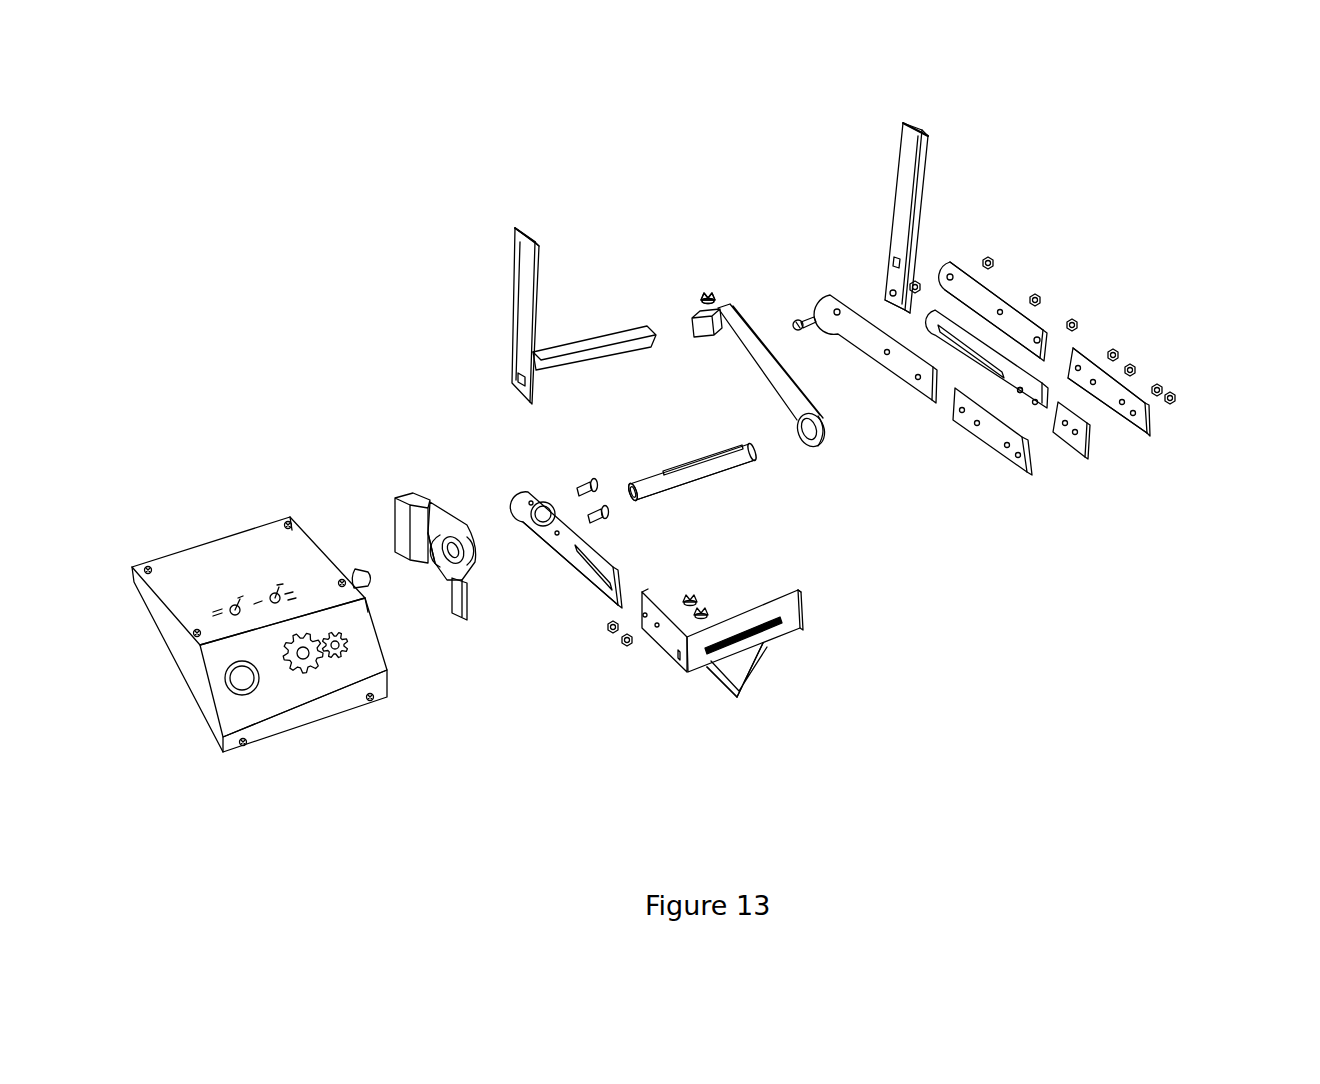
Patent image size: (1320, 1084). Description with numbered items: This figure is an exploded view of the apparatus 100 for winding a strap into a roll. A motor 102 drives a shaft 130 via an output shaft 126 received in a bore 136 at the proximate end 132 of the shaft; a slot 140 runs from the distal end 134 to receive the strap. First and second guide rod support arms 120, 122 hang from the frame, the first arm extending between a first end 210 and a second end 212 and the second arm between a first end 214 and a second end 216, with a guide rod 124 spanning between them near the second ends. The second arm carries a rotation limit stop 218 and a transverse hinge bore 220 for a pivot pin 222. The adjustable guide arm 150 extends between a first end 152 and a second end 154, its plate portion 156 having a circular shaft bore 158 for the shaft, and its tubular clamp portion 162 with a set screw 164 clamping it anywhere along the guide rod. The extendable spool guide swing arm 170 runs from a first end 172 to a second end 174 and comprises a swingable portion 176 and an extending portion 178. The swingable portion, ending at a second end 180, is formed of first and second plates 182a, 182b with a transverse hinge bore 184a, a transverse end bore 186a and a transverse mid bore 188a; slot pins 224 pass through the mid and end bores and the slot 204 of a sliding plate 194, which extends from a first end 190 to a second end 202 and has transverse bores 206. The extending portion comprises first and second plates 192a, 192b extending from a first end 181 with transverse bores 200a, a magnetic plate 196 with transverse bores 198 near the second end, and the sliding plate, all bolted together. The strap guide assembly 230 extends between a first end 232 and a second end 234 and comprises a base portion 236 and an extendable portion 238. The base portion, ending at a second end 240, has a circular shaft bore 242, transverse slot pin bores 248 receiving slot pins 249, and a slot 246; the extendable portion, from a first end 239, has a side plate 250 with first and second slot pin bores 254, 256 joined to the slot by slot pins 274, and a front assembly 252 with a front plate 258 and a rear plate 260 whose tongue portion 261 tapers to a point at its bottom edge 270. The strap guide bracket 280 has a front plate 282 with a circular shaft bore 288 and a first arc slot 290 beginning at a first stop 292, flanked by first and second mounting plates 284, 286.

The apparatus for winding a strap into a roll 100 is at (1130, 142).
The motor 102 is at (203, 563).
The first guide rod support arm 120 is at (512, 295).
The second guide rod support arm 122 is at (895, 167).
The guide rod 124 is at (577, 345).
The output shaft 126 is at (358, 578).
The shaft 130 is at (709, 452).
The proximate end 132 is at (628, 485).
The distal end 134 is at (750, 445).
The bore 136 is at (623, 490).
The slot 140 is at (705, 455).
The adjustable guide arm 150 is at (778, 372).
The first end 152 is at (708, 292).
The second end 154 is at (825, 443).
The plate portion 156 is at (793, 373).
The circular shaft bore 158 is at (812, 425).
The tubular clamp portion 162 is at (692, 320).
The set screw 164 is at (702, 297).
The extendable spool guide swing arm 170 is at (1102, 364).
The first end 172 is at (945, 262).
The second end 174 is at (1150, 425).
The swingable portion 176 is at (1083, 253).
The extending portion 178 is at (1188, 327).
The second end 180 is at (1074, 350).
The first end 181 is at (1075, 355).
The first plate 182a is at (983, 282).
The second plate 182b is at (893, 380).
The transverse hinge bore 184a is at (952, 274).
The transverse end bore 186a is at (1038, 337).
The transverse mid bore 188a is at (1001, 309).
The first end 190 is at (937, 262).
The first plate 192a is at (1176, 397).
The second plate 192b is at (978, 440).
The sliding plate 194 is at (955, 355).
The magnetic plate 196 is at (1086, 448).
The transverse bores 198 is at (1078, 433).
The transverse bores 200a is at (1096, 380).
The second end 202 is at (1021, 393).
The slot 204 is at (963, 343).
The transverse bores 206 is at (1036, 405).
The first end 210 is at (525, 228).
The second end 212 is at (520, 393).
The first end 214 is at (905, 122).
The second end 216 is at (888, 308).
The rotation limit stop 218 is at (916, 281).
The transverse hinge bore 220 is at (891, 291).
The pivot pin 222 is at (797, 320).
The slot pins 224 is at (1041, 299).
The strap guide assembly 230 is at (727, 667).
The first end 232 is at (568, 536).
The second end 234 is at (690, 672).
The base portion 236 is at (580, 572).
The extendable portion 238 is at (796, 591).
The first end 239 is at (642, 591).
The second end 240 is at (620, 590).
The circular shaft bore 242 is at (546, 503).
The slot 246 is at (618, 635).
The transverse slot pin bores 248 is at (529, 506).
The slot pins 249 is at (592, 480).
The side plate 250 is at (668, 640).
The front assembly 252 is at (768, 645).
The first slot pin bore 254 is at (645, 617).
The second slot pin bore 256 is at (657, 627).
The front plate 258 is at (790, 625).
The rear plate 260 is at (722, 690).
The tongue portion 261 is at (745, 670).
The bottom edge 270 is at (730, 690).
The slot pins 274 is at (697, 598).
The strap guide bracket 280 is at (445, 566).
The front plate 282 is at (443, 517).
The first mounting plate 284 is at (400, 498).
The second mounting plate 286 is at (452, 608).
The circular shaft bore 288 is at (497, 548).
The first arc slot 290 is at (458, 535).
The first stop 292 is at (430, 553).